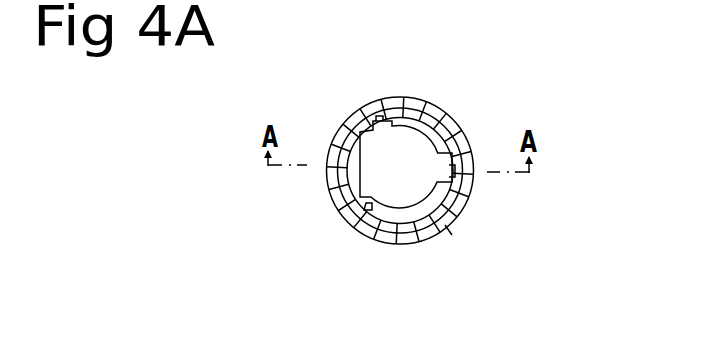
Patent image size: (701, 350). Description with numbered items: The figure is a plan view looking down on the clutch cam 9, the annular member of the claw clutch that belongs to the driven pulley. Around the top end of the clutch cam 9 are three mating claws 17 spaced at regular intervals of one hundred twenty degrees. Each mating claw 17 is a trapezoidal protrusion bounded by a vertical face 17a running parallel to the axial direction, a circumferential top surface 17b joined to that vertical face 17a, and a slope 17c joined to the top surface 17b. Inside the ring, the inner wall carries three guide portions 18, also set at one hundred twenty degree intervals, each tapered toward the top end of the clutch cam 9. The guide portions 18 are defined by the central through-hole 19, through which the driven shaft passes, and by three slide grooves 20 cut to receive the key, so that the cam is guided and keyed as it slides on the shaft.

The clutch cam 9 is at (473, 205).
The mating claw 17 is at (330, 137).
The vertical face 17a is at (358, 110).
The circumferencial top surface 17b is at (342, 130).
The slope 17c is at (456, 102).
The guide portion 18 is at (428, 114).
The through-hole 19 is at (445, 225).
The slide groove 20 is at (385, 116).